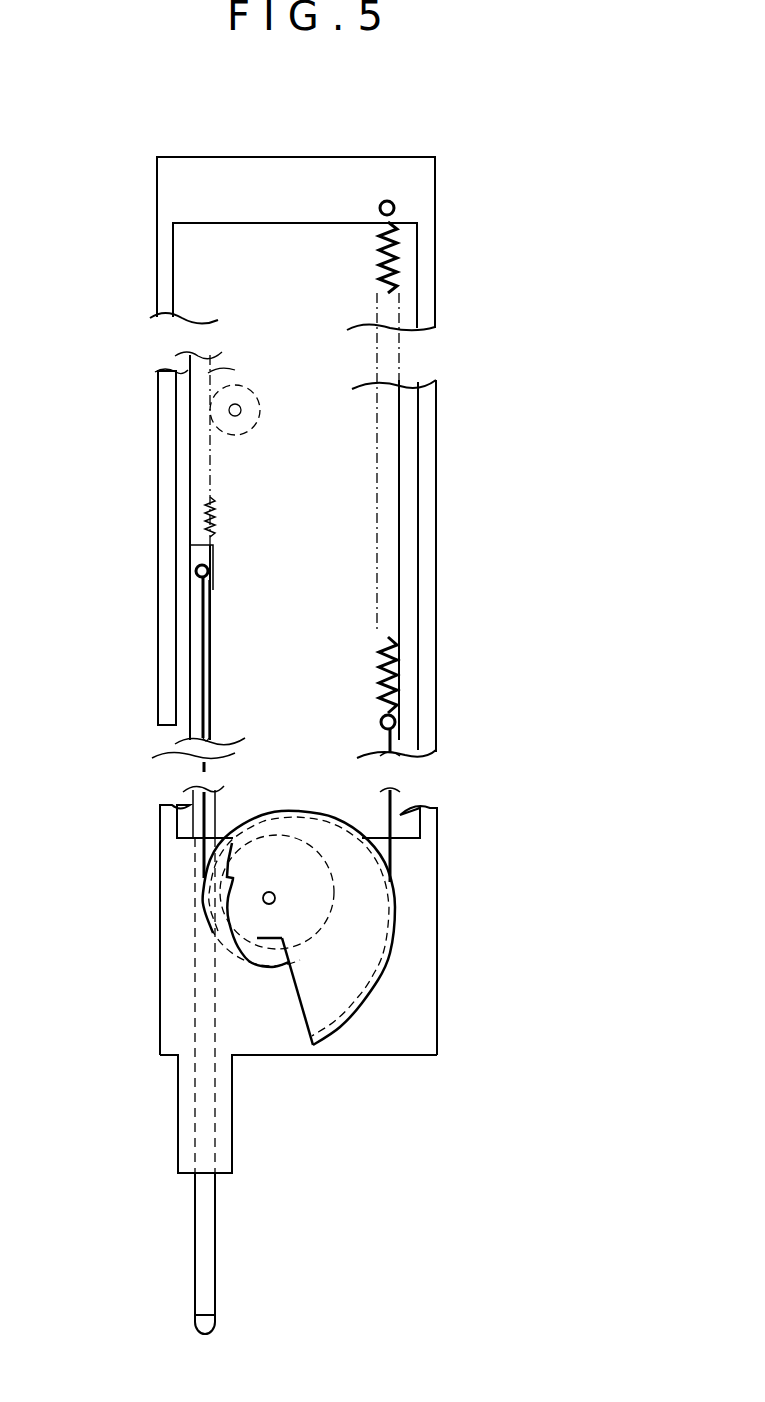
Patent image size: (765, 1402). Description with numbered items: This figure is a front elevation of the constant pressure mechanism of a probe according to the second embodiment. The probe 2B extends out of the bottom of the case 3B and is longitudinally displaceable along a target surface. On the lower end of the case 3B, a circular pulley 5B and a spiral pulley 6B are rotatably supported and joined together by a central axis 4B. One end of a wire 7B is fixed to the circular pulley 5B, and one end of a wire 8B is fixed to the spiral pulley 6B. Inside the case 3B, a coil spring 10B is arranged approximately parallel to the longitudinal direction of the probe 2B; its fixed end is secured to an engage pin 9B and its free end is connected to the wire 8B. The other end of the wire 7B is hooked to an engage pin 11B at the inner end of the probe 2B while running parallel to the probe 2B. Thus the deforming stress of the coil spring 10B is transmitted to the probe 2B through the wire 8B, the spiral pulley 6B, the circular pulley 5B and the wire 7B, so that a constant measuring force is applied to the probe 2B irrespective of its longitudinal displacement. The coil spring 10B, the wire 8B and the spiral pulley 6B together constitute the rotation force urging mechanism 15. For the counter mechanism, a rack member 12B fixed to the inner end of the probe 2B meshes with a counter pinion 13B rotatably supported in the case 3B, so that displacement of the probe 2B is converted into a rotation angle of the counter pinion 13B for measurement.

The probe 2B is at (190, 792).
The case 3B is at (162, 480).
The central axis 4B is at (262, 900).
The circular pulley 5B is at (228, 930).
The spiral pulley 6B is at (362, 942).
The wire 7B is at (198, 654).
The wire 8B is at (392, 800).
The engage pin 9B is at (386, 201).
The coil spring 10B is at (400, 473).
The engage pin 11B is at (196, 569).
The rack member 12B is at (195, 415).
The counter pinion 13B is at (252, 430).
The rotation force urging mechanism 15 is at (484, 607).